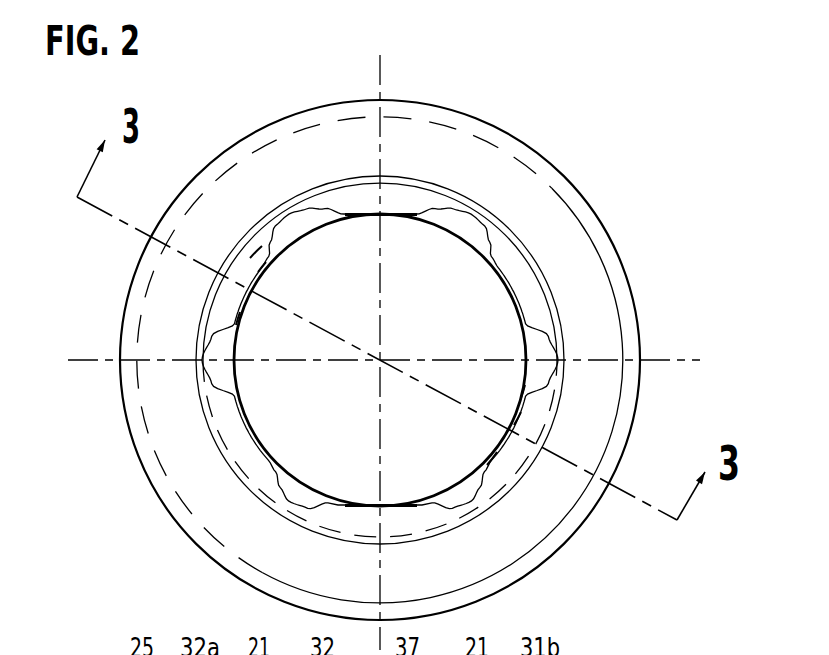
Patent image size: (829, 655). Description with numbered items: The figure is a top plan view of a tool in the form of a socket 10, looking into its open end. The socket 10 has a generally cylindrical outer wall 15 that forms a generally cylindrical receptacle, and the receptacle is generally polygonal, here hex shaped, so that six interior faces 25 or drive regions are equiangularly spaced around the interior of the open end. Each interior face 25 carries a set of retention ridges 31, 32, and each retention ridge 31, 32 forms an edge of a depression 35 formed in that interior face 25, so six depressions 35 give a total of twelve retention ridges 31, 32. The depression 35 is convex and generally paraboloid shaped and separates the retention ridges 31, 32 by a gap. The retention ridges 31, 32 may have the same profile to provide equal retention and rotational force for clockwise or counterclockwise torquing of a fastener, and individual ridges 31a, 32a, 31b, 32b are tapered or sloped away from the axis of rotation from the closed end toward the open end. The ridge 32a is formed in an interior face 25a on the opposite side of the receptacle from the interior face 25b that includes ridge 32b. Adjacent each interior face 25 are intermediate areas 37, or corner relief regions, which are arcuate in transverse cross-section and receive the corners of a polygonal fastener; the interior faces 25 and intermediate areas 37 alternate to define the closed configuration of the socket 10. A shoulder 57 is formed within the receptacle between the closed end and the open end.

The socket 10 is at (565, 163).
The outer wall 15 is at (430, 103).
The interior face 25 is at (380, 360).
The interior face 25a is at (265, 280).
The interior face 25b is at (523, 423).
The retention ridge 31 is at (380, 360).
The retention ridge 31a is at (240, 318).
The retention ridge 31b is at (527, 393).
The retention ridge 32 is at (380, 360).
The retention ridge 32a is at (258, 262).
The retention ridge 32b is at (493, 463).
The depression 35 is at (367, 213).
The intermediate area 37 is at (287, 213).
The shoulder 57 is at (346, 451).